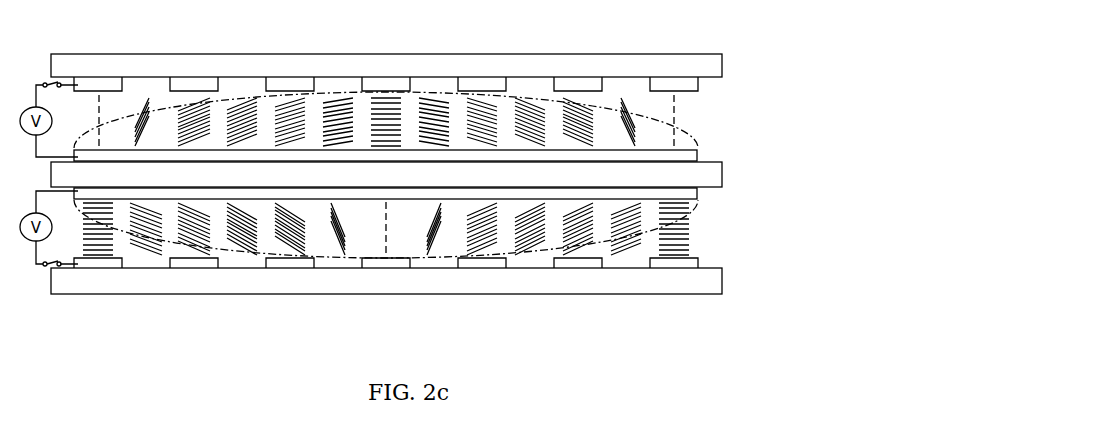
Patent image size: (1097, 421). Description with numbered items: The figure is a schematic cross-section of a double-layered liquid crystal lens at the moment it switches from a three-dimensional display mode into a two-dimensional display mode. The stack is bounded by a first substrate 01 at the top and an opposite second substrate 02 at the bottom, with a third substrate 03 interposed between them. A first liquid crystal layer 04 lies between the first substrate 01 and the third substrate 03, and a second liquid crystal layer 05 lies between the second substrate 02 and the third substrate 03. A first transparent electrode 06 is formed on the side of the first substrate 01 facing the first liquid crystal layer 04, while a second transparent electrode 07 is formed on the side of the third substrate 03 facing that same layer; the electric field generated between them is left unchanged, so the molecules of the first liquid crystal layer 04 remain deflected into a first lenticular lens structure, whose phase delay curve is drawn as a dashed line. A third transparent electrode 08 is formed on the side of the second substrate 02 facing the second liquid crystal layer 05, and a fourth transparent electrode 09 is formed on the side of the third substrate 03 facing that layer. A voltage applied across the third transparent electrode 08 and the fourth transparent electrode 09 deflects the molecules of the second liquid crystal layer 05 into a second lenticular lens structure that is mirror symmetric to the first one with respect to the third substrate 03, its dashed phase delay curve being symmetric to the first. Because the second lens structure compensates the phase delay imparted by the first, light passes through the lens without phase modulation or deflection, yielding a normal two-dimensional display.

The first substrate 01 is at (707, 62).
The second substrate 02 is at (707, 278).
The third substrate 03 is at (707, 173).
The first liquid crystal layer 04 is at (688, 120).
The second liquid crystal layer 05 is at (688, 230).
The first transparent electrode 06 is at (698, 84).
The second transparent electrode 07 is at (697, 155).
The third transparent electrode 08 is at (698, 262).
The fourth transparent electrode 09 is at (697, 193).